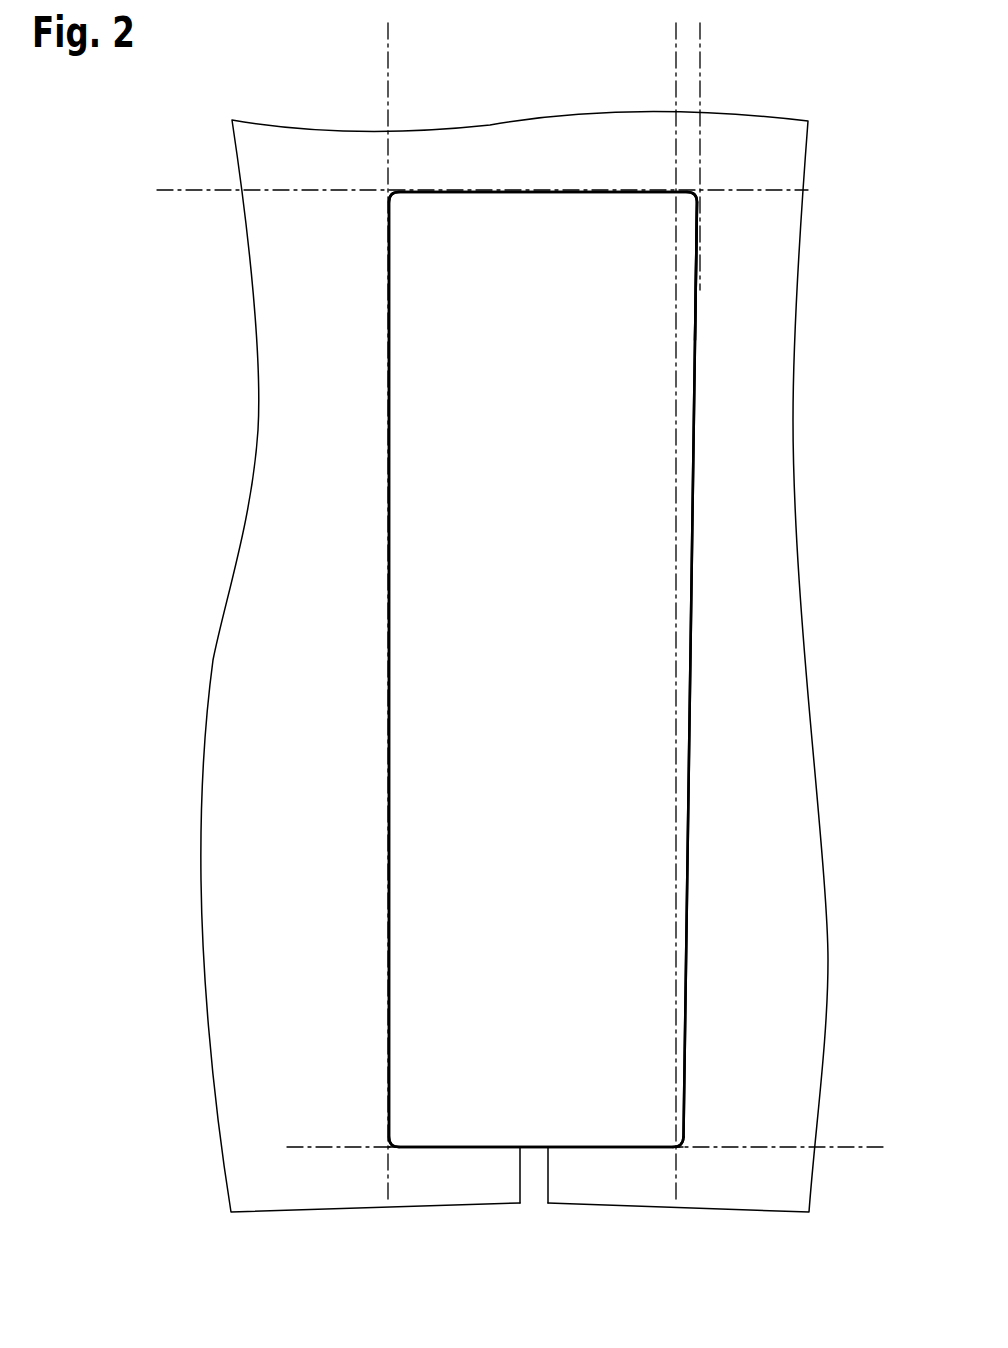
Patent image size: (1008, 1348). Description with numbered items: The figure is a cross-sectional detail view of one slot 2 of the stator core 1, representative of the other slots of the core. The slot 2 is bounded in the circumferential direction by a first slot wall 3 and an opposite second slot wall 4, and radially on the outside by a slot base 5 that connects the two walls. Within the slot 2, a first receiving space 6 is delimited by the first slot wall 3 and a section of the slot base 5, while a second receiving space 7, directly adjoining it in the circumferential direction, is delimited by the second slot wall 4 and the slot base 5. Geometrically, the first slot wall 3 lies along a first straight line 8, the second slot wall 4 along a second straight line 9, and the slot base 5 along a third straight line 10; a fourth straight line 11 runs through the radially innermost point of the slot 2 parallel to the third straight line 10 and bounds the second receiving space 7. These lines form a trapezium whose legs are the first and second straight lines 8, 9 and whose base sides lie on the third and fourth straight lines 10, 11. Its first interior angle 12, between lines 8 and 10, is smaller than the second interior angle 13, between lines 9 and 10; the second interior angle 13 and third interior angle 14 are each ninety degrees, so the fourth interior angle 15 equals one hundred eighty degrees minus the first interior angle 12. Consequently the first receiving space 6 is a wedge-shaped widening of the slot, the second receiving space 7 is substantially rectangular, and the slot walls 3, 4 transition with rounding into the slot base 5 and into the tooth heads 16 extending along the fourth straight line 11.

The stator core 1 is at (530, 147).
The slot 2 is at (563, 230).
The first slot wall 3 is at (668, 462).
The second slot wall 4 is at (413, 462).
The slot base 5 is at (471, 203).
The first receiving space 6 is at (688, 292).
The second receiving space 7 is at (527, 528).
The first straight line 8 is at (700, 63).
The second straight line 9 is at (388, 63).
The third straight line 10 is at (163, 190).
The fourth straight line 11 is at (880, 1147).
The first interior angle 12 is at (697, 238).
The second interior angle 13 is at (389, 238).
The third interior angle 14 is at (389, 1081).
The fourth interior angle 15 is at (683, 1081).
The tooth heads 16 is at (473, 1185).